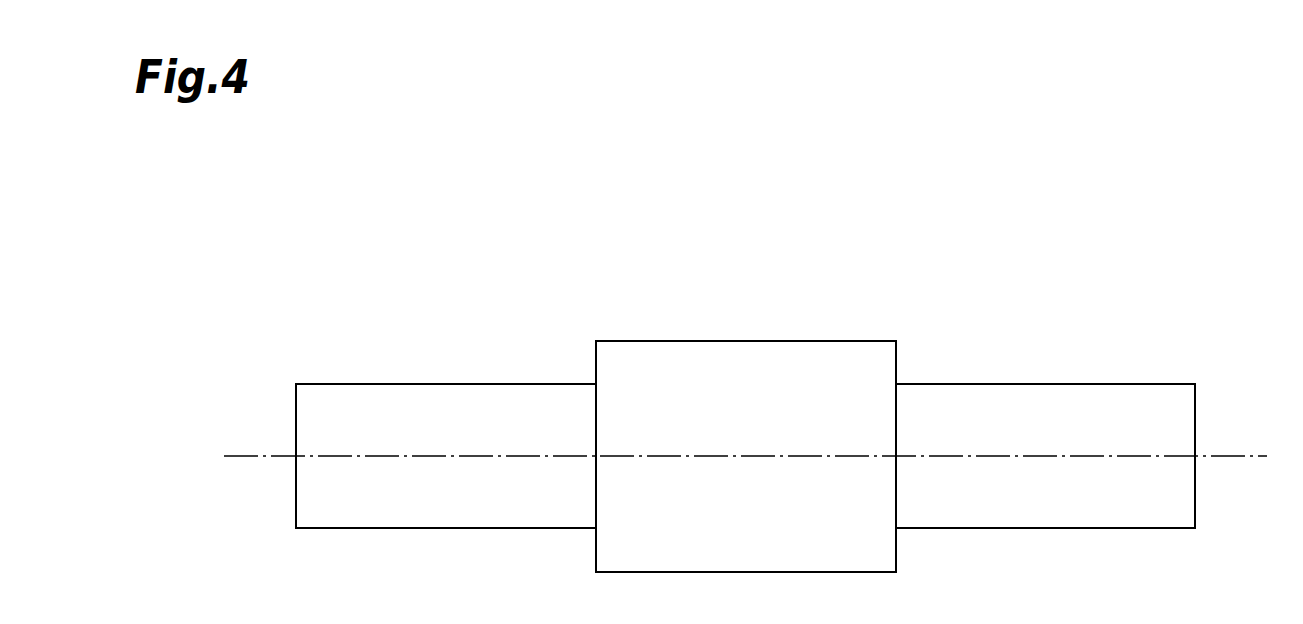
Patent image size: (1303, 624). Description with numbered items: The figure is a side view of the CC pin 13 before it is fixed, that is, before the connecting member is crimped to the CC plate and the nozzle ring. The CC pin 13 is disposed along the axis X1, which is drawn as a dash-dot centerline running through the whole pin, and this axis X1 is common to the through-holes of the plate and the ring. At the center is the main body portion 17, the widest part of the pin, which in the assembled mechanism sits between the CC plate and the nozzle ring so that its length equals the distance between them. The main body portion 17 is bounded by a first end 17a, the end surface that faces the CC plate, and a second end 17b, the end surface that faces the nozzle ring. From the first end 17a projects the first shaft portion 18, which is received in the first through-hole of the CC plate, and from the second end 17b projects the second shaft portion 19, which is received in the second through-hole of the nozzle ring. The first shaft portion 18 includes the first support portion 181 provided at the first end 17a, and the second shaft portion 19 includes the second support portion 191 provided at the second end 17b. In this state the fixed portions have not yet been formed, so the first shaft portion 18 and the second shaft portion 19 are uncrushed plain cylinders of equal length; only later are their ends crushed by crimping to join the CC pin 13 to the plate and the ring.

The CC pin 13 is at (790, 341).
The main body portion 17 is at (697, 357).
The first end 17a is at (596, 553).
The second end 17b is at (896, 553).
The first shaft portion 18 is at (437, 384).
The first support portion 181 is at (350, 399).
The second shaft portion 19 is at (1061, 384).
The second support portion 191 is at (1141, 399).
The axis X1 is at (1243, 456).